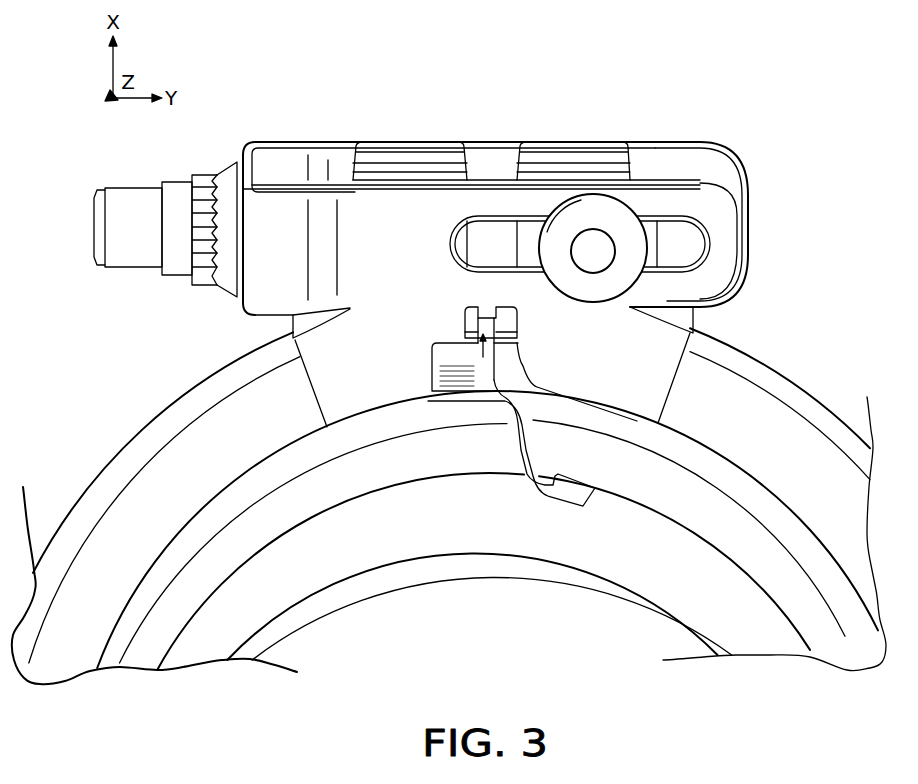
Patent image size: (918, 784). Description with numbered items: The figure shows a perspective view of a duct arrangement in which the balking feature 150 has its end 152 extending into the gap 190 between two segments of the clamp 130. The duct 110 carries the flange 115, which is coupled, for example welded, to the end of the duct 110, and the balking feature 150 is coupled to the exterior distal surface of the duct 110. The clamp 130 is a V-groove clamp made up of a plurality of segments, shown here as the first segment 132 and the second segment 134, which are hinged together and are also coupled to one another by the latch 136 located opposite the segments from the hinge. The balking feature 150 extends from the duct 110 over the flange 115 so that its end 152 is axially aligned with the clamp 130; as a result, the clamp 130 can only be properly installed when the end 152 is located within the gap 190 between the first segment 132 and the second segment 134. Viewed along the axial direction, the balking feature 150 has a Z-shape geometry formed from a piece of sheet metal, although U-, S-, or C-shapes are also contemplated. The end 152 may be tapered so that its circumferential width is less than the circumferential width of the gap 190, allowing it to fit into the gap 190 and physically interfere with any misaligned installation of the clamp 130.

The latch 136 is at (698, 131).
The gap 190 is at (488, 312).
The balking feature 150 is at (448, 349).
The end 152 is at (521, 344).
The second segment 134 is at (742, 368).
The clamp 130 is at (801, 406).
The first segment 132 is at (157, 437).
The flange 115 is at (838, 627).
The duct 110 is at (741, 627).